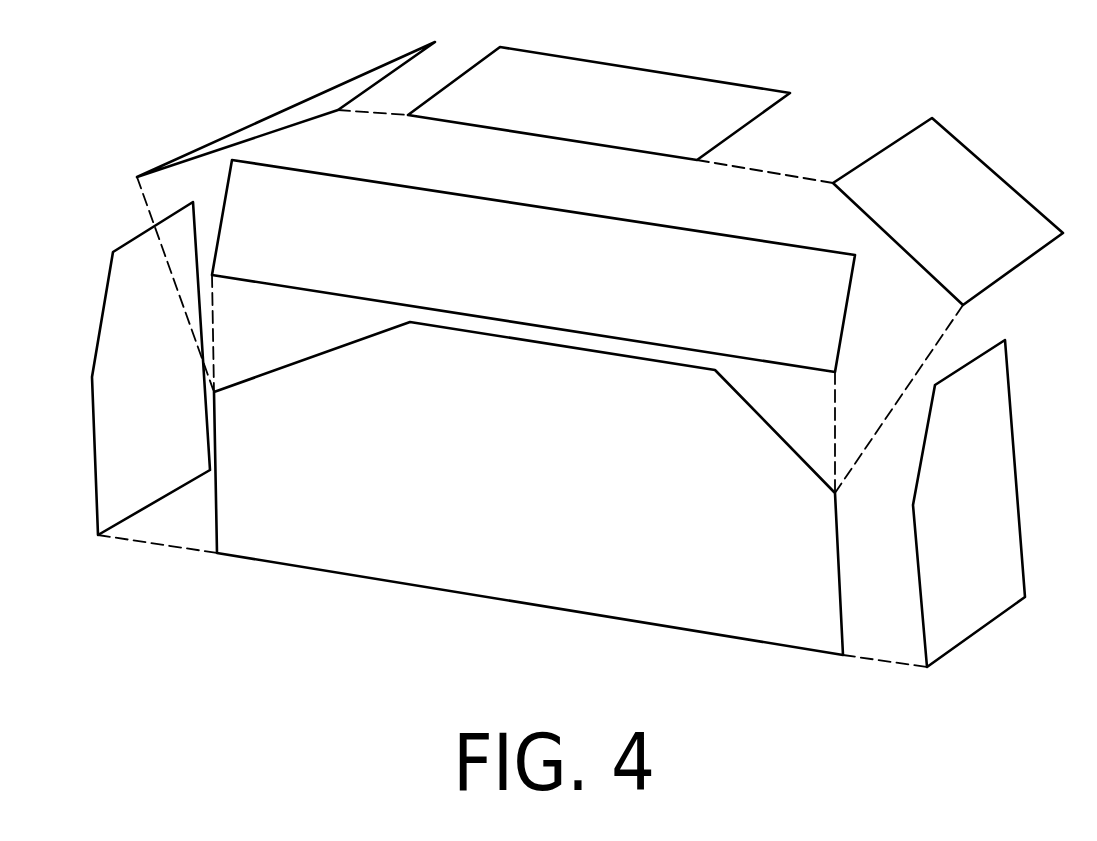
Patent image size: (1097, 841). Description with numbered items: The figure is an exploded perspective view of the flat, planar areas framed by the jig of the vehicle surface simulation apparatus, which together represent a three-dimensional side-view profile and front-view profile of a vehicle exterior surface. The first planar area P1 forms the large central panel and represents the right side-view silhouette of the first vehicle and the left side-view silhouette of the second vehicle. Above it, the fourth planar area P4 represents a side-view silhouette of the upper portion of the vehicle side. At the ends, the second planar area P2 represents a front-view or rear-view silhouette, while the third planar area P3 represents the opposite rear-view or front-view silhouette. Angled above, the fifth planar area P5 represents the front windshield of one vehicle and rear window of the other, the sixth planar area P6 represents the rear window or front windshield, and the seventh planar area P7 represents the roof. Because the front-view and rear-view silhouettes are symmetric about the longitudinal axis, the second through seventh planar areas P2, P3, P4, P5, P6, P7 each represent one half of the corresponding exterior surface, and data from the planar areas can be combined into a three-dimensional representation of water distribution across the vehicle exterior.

The first planar area P1 is at (535, 504).
The second planar area P2 is at (987, 534).
The third planar area P3 is at (169, 404).
The fourth planar area P4 is at (535, 282).
The fifth planar area P5 is at (964, 221).
The sixth planar area P6 is at (279, 129).
The seventh planar area P7 is at (612, 117).